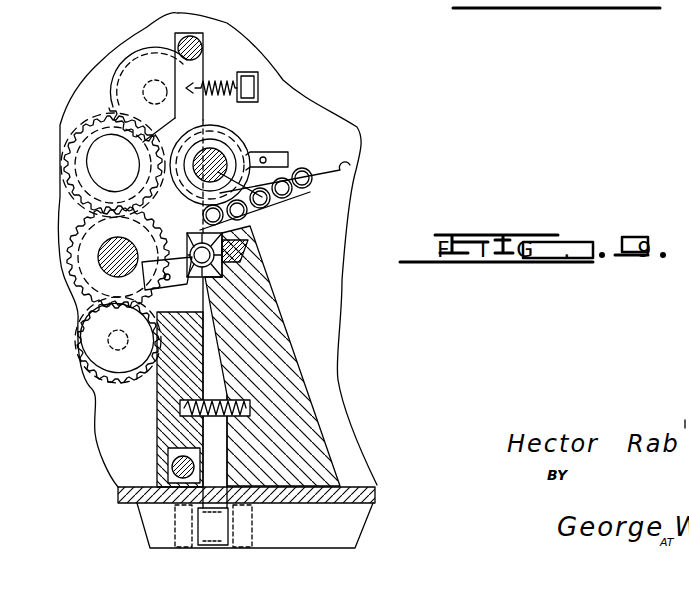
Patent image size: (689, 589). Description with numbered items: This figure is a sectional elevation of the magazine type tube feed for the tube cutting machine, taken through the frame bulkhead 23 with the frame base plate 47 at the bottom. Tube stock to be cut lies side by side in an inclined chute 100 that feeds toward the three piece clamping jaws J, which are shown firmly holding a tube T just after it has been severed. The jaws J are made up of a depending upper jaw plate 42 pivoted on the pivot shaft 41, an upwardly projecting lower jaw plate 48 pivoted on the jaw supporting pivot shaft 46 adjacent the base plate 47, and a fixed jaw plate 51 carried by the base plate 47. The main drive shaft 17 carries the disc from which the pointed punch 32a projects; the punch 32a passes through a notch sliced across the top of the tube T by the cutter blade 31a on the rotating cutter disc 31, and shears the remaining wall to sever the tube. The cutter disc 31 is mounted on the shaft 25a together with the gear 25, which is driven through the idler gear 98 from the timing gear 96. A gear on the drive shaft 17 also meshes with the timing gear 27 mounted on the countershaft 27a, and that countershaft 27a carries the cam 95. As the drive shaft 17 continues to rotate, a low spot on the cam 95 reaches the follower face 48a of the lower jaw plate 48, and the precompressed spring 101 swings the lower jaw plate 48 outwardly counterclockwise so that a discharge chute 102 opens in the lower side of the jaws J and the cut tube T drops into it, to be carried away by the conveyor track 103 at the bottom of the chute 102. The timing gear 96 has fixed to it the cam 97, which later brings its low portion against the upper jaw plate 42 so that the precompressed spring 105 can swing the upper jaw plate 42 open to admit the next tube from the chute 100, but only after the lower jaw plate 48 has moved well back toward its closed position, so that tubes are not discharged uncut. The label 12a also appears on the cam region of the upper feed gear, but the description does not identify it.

The idler gear 98 is at (117, 70).
The cam 97 is at (92, 143).
The cam 12a is at (113, 163).
The timing gear 96 is at (82, 191).
The frame bulkhead 23 is at (84, 229).
The main drive shaft 17 is at (100, 257).
The timing gear 27 is at (84, 375).
The countershaft 27a is at (90, 318).
The cam 95 is at (128, 363).
The pivot shaft 41 is at (203, 42).
The jaw plate 42 is at (206, 62).
The precompressed spring 105 is at (238, 72).
The gear 25 is at (217, 119).
The cutter disc 31 is at (258, 136).
The cutter blade 31a is at (290, 156).
The inclined chute 100 is at (362, 153).
The shaft 25a is at (268, 210).
The clamping jaws J is at (233, 246).
The tube T is at (258, 278).
The punch 32a is at (214, 280).
The follower face 48a is at (208, 322).
The fixed jaw plate 51 is at (300, 360).
The jaw plate 48 is at (167, 427).
The jaw supporting pivot shaft 46 is at (167, 460).
The precompressed spring 101 is at (226, 396).
The discharge chute 102 is at (216, 452).
The conveyor track 103 is at (243, 521).
The frame base plate 47 is at (364, 485).